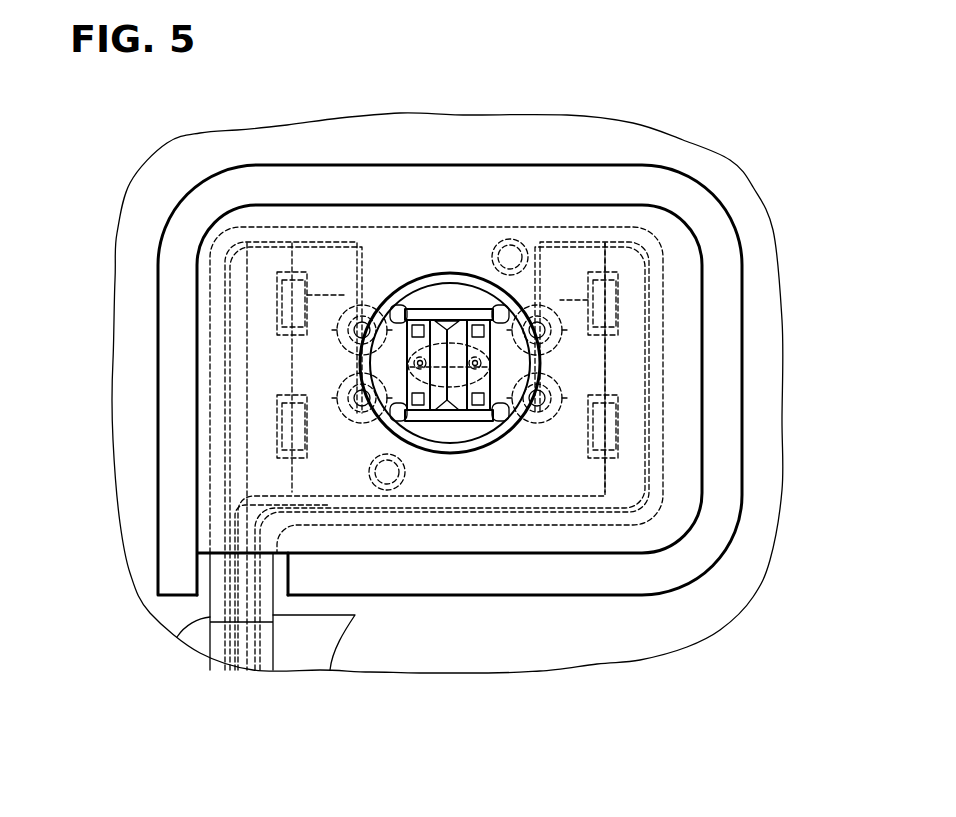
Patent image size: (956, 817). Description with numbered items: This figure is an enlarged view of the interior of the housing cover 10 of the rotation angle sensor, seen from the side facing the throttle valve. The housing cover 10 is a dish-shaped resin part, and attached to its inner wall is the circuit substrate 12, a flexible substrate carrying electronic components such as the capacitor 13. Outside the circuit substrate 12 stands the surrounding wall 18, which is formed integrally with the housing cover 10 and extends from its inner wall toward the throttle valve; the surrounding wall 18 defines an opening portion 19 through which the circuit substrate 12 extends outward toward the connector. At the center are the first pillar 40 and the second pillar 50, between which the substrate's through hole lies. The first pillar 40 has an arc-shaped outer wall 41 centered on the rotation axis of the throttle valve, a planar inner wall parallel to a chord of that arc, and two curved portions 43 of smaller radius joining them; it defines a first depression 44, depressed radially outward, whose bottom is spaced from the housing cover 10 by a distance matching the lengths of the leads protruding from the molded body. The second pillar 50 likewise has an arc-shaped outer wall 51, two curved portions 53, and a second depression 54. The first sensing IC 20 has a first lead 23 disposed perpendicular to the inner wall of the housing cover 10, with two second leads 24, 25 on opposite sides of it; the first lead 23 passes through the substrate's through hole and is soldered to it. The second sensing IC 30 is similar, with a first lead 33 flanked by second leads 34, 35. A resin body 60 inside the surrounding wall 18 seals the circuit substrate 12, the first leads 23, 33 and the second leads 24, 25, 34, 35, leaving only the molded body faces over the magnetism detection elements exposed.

The housing cover 10 is at (723, 610).
The circuit substrate 12 is at (213, 603).
The capacitor 13 is at (278, 293).
The surrounding wall 18 is at (647, 565).
The opening portion 19 is at (278, 582).
The first sensing IC 20 is at (410, 363).
The first lead 23 is at (415, 357).
The second lead 24 is at (370, 313).
The second lead 25 is at (362, 422).
The second sensing IC 30 is at (483, 355).
The first lead 33 is at (495, 370).
The second lead 34 is at (517, 320).
The second lead 35 is at (522, 422).
The first pillar 40 is at (455, 298).
The outer wall 41 is at (483, 290).
The curved portions 43 is at (370, 315).
The first depression 44 is at (435, 312).
The second pillar 50 is at (462, 432).
The outer wall 51 is at (475, 423).
The curved portions 53 is at (397, 420).
The second depression 54 is at (440, 415).
The resin body 60 is at (378, 247).